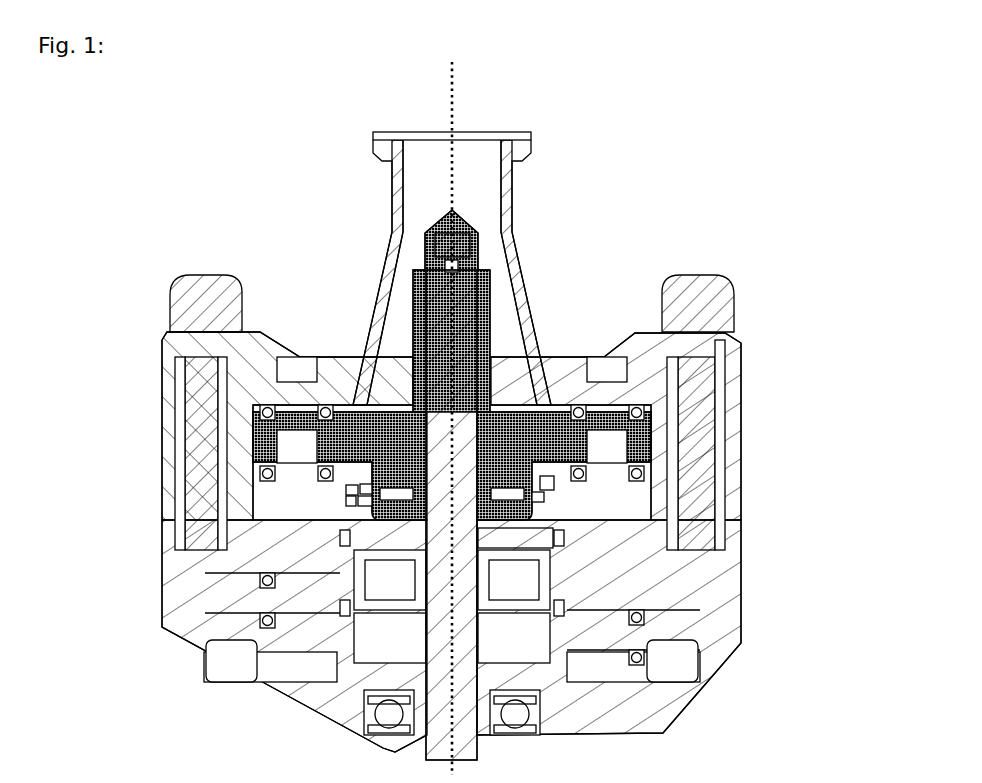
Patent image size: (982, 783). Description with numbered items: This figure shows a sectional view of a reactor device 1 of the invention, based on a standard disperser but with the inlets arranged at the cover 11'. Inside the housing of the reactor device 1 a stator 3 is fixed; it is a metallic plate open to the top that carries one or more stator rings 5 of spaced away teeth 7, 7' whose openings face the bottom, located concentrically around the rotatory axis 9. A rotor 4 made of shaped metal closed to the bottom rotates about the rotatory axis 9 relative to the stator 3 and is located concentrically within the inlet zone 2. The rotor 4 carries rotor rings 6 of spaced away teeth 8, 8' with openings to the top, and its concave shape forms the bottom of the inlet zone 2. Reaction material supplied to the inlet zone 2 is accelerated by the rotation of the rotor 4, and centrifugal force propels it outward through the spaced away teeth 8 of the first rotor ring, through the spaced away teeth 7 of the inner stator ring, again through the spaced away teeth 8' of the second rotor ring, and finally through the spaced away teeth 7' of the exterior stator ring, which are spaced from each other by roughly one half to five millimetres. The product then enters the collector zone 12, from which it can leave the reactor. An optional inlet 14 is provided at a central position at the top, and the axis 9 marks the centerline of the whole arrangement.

The reactor device 1 is at (289, 333).
The inlet zone 2 is at (392, 466).
The stator 3 is at (622, 428).
The rotor 4 is at (432, 222).
The stator ring 5 is at (557, 482).
The rotor ring 6 is at (545, 497).
The spaced away teeth of first (inner) stator ring 7 is at (218, 531).
The spaced away teeth of second stator ring 7' is at (209, 499).
The spaced away teeth of first (interior) rotor ring 8 is at (218, 410).
The spaced away teeth of second rotor ring 8' is at (210, 442).
The rotatory axis 9 is at (455, 160).
The cover of reactor device 11' is at (492, 240).
The collector zone 12 is at (553, 535).
The optional inlet at central position 14 is at (403, 132).